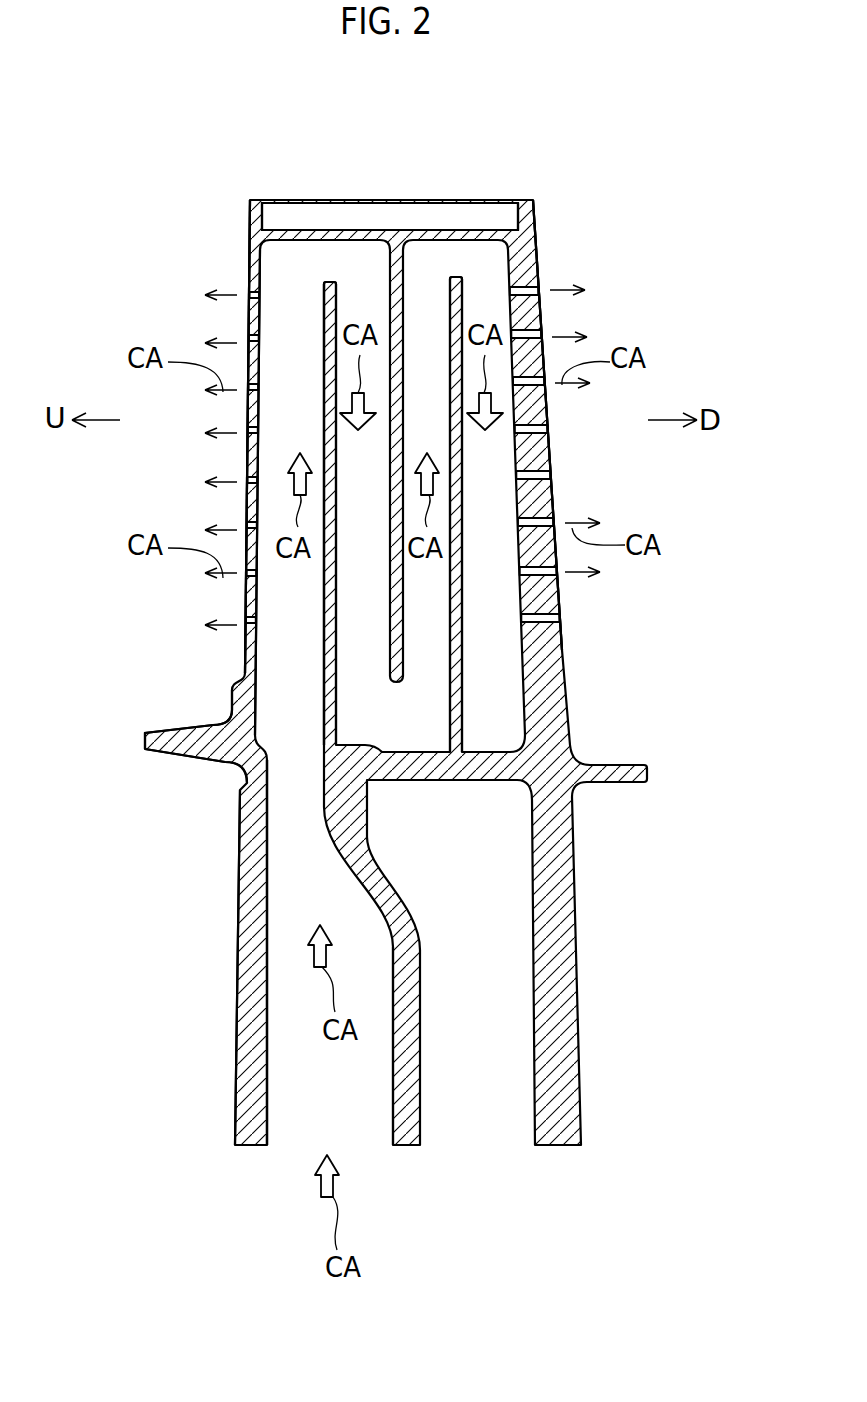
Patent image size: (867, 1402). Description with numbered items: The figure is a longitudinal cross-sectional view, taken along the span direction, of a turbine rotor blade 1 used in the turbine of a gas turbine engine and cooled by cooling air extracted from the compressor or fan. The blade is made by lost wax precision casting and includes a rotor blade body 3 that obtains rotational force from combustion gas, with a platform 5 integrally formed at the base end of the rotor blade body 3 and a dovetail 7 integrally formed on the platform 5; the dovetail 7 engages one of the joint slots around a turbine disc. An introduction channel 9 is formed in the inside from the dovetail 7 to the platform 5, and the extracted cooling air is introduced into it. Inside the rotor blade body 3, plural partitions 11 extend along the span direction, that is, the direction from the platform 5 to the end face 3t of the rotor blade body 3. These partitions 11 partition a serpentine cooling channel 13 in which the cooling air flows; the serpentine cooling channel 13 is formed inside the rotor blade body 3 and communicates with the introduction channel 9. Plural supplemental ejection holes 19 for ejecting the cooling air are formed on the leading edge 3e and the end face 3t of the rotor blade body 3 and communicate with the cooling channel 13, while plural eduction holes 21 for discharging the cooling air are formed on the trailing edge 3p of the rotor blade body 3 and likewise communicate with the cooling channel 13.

The turbine rotor blade 1 is at (578, 154).
The rotor blade body 3 is at (247, 445).
The leading edge 3e is at (250, 258).
The trailing edge 3p is at (534, 246).
The end face 3t is at (406, 236).
The platform 5 is at (187, 742).
The dovetail 7 is at (237, 968).
The introduction channel 9 is at (288, 1112).
The partitions 11 is at (338, 300).
The serpentine cooling channel 13 is at (300, 597).
The supplemental ejection holes 19 is at (285, 235).
The eduction holes 21 is at (538, 320).